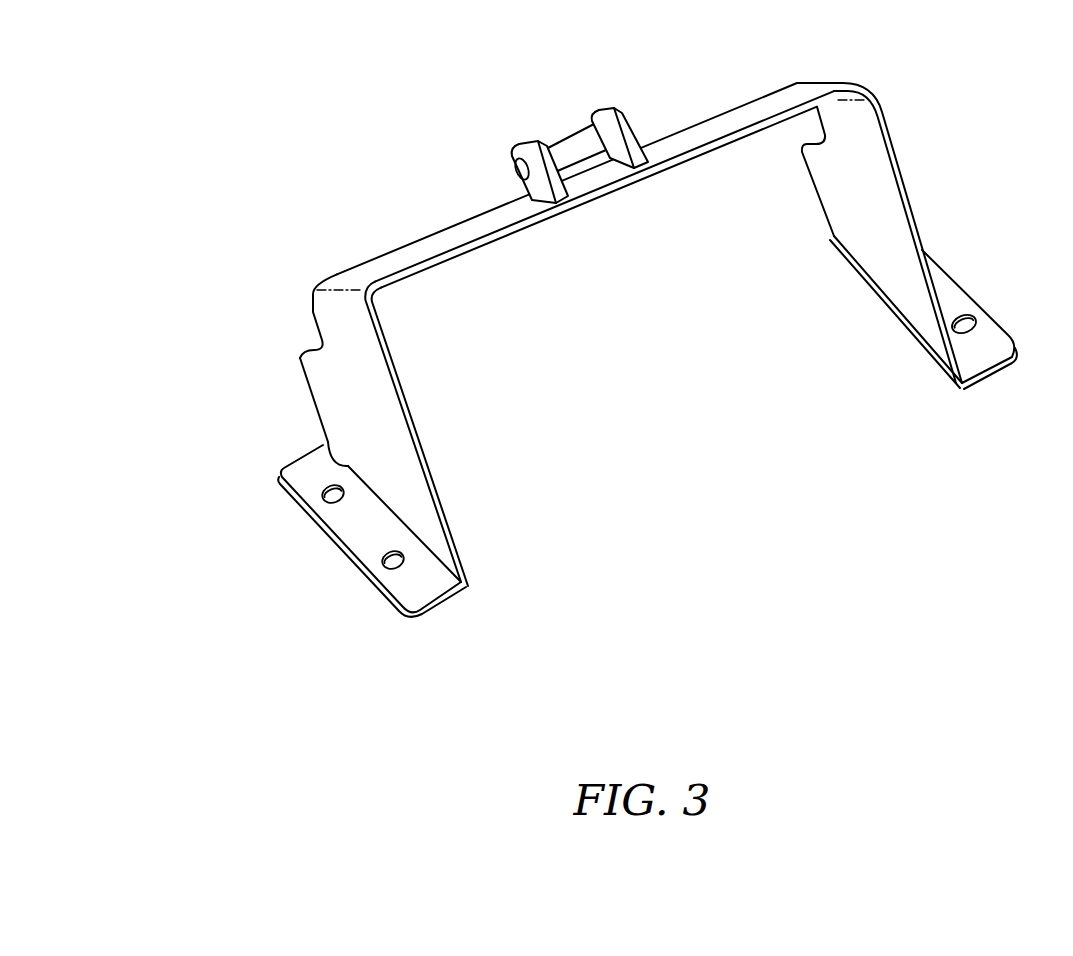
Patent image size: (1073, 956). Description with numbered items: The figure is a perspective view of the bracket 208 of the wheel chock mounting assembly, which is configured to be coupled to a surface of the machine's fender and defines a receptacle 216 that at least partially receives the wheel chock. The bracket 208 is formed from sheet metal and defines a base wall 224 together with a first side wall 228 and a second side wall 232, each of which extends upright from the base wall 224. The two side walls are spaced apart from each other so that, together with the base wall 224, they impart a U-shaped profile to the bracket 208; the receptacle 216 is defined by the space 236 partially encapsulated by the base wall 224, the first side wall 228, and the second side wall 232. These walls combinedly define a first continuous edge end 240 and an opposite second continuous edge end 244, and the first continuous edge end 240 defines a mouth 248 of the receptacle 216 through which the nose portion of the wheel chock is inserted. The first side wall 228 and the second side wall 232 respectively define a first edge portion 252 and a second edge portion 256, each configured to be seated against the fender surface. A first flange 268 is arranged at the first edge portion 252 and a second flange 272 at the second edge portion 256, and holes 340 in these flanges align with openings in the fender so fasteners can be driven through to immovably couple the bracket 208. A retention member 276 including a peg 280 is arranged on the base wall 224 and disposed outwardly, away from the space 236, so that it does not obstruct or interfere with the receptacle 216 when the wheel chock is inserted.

The bracket 208 is at (298, 138).
The receptacle 216 is at (681, 428).
The base wall 224 is at (443, 242).
The first side wall 228 is at (337, 390).
The second side wall 232 is at (883, 128).
The space 236 is at (547, 322).
The first continuous edge end 240 is at (459, 520).
The second continuous edge end 244 is at (301, 316).
The mouth 248 is at (722, 374).
The first edge portion 252 is at (327, 440).
The second edge portion 256 is at (936, 356).
The first flange 268 is at (343, 546).
The second flange 272 is at (961, 282).
The retention member 276 is at (548, 141).
The peg 280 is at (561, 145).
The holes 340 is at (319, 498).